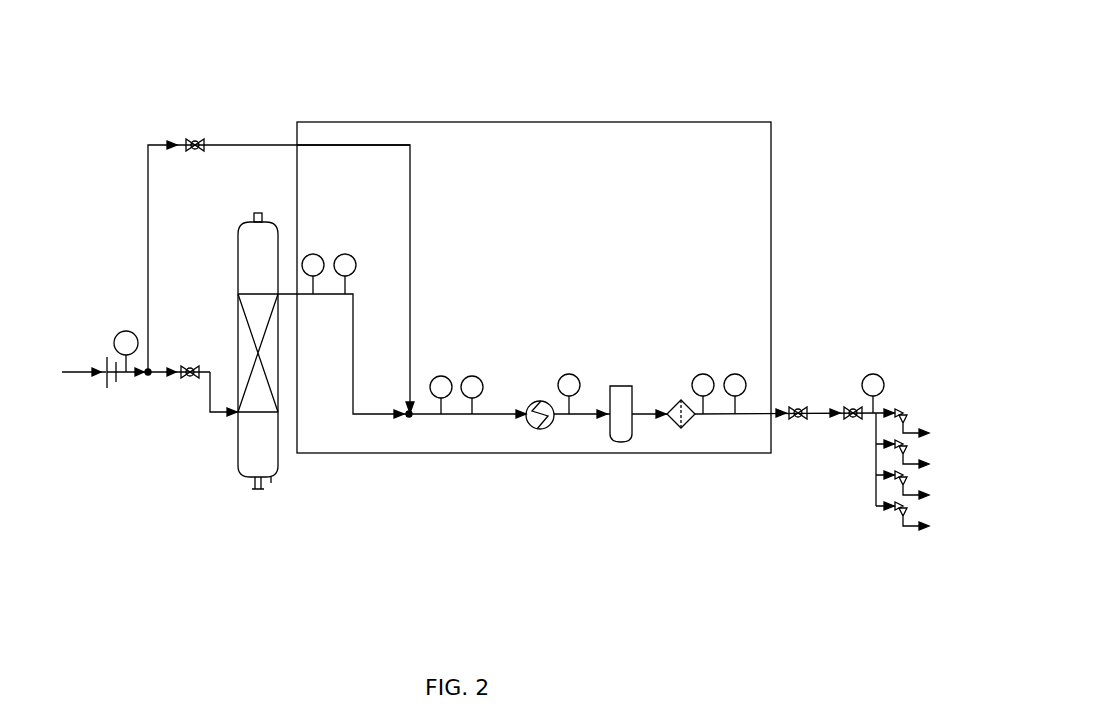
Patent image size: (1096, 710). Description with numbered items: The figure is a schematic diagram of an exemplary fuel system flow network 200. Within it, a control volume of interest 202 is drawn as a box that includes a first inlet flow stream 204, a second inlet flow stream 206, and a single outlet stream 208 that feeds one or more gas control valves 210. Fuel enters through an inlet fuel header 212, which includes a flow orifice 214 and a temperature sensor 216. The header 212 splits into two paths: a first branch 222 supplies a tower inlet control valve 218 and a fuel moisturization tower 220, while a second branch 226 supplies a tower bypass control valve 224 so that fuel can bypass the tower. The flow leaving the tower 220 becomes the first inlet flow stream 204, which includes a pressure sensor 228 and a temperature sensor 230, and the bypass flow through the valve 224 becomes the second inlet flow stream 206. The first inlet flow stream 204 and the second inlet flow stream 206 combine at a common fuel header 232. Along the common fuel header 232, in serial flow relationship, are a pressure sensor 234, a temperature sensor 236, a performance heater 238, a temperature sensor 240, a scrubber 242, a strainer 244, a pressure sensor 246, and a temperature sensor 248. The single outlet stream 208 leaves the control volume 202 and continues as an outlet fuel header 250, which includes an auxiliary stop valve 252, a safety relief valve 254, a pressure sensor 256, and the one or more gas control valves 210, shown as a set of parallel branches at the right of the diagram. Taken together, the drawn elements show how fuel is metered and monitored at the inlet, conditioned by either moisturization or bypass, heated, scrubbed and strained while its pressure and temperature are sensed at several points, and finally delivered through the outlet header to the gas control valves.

The fuel system flow network 200 is at (348, 58).
The control volume of interest 202 is at (771, 168).
The first inlet flow stream 204 is at (297, 296).
The second inlet flow stream 206 is at (320, 147).
The single outlet stream 208 is at (710, 414).
The gas control valves 210 is at (857, 500).
The inlet fuel header 212 is at (109, 378).
The flow orifice 214 is at (105, 368).
The temperature sensor 216 is at (122, 330).
The tower inlet control valve 218 is at (193, 366).
The fuel moisturization tower 220 is at (250, 222).
The first branch 222 is at (210, 425).
The tower bypass control valve 224 is at (193, 140).
The second branch 226 is at (254, 135).
The pressure sensor 228 is at (313, 252).
The temperature sensor 230 is at (348, 252).
The common fuel header 232 is at (425, 416).
The pressure sensor 234 is at (441, 374).
The temperature sensor 236 is at (472, 374).
The performance heater 238 is at (545, 401).
The temperature sensor 240 is at (569, 373).
The scrubber 242 is at (620, 386).
The strainer 244 is at (681, 400).
The pressure sensor 246 is at (700, 374).
The temperature sensor 248 is at (735, 374).
The outlet fuel header 250 is at (823, 368).
The auxiliary stop valve 252 is at (798, 420).
The safety relief valve 254 is at (853, 420).
The pressure sensor 256 is at (875, 373).